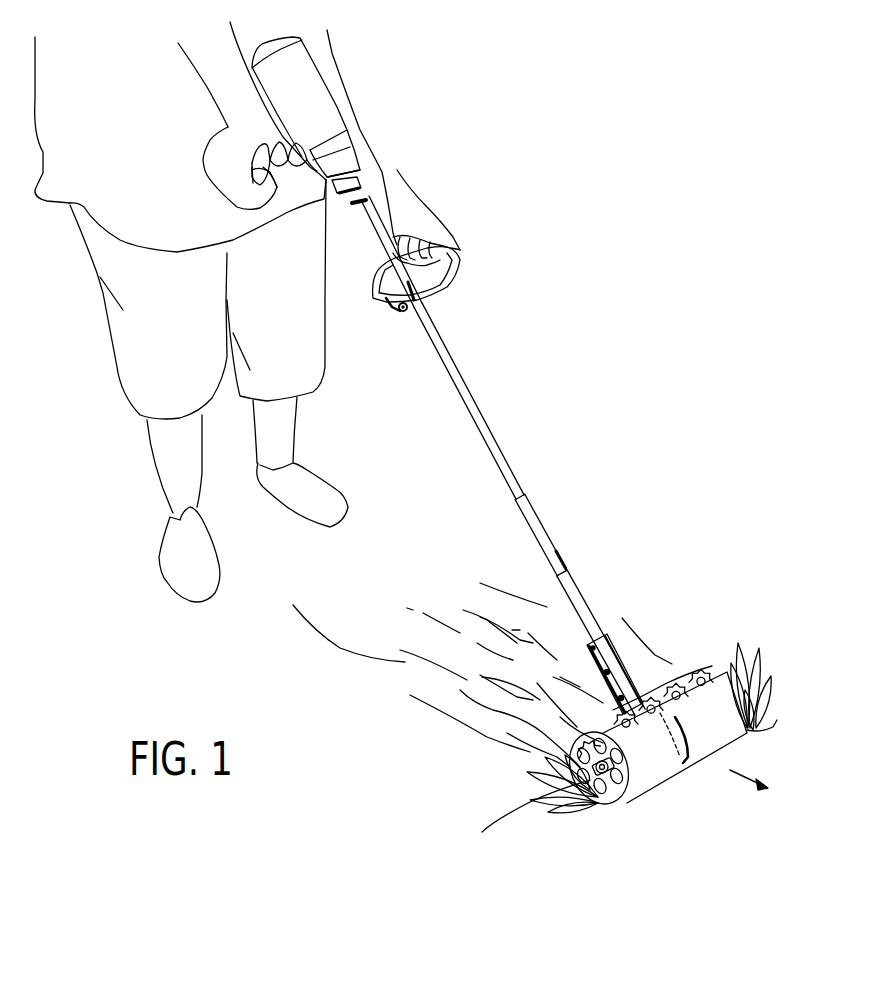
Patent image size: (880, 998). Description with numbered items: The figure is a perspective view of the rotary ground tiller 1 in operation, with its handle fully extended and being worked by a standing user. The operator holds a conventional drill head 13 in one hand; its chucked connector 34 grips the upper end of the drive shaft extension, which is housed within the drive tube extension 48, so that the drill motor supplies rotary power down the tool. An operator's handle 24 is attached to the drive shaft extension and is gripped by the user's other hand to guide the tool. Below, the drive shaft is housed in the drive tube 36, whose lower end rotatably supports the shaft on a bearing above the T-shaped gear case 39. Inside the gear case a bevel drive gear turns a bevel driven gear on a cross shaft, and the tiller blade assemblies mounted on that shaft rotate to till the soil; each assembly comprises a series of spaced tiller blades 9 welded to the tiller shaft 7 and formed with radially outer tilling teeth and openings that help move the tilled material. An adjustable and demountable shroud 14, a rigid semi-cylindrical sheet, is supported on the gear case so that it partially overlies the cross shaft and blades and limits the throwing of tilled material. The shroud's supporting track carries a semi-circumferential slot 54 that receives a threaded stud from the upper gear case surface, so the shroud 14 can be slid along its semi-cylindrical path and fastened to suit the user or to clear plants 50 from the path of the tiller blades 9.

The rotary ground tiller 1 is at (577, 523).
The cordless drill 13 is at (310, 113).
The chucked connector 34 is at (357, 177).
The operator's handle 24 is at (445, 283).
The drive tube extension 48 is at (472, 410).
The drive tube 36 is at (572, 587).
The T-shaped gear case 39 is at (623, 670).
The tiller blades 9 is at (707, 663).
The shroud 14 is at (674, 760).
The semi-circumferential slot 54 is at (676, 762).
The weeds 50 is at (773, 677).
The tiller shaft 7 is at (482, 832).